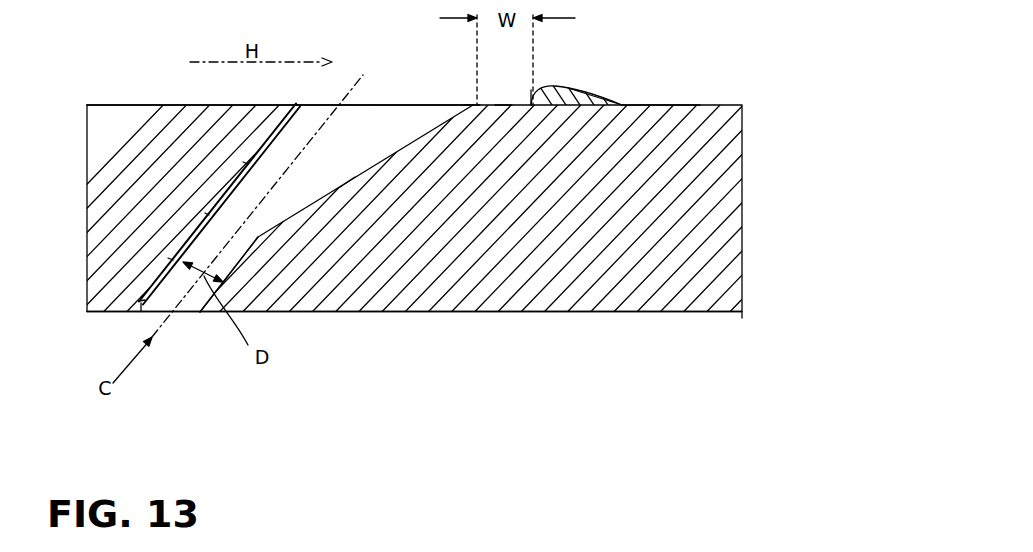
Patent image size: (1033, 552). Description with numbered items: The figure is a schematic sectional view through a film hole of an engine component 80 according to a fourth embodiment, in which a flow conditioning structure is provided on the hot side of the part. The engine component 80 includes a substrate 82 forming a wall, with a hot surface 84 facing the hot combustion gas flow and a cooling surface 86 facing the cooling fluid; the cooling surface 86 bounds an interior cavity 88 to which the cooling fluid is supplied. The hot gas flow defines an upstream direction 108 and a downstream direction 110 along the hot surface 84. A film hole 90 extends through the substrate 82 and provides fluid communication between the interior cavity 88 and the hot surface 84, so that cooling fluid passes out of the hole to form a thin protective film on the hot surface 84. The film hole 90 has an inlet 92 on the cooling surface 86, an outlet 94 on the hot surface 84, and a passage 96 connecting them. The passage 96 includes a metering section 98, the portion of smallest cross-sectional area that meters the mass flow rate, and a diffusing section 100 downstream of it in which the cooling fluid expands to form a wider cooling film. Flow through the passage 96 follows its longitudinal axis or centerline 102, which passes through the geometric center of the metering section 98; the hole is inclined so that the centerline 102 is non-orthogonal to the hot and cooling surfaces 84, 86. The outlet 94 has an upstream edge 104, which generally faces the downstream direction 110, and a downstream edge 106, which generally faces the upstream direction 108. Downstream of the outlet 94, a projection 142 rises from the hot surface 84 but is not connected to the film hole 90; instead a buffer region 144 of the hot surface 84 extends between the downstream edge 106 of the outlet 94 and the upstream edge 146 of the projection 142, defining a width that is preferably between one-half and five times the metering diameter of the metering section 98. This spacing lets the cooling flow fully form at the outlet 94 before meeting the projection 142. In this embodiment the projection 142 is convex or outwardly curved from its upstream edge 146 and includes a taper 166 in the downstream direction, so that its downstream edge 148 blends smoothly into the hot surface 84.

The engine component 80 is at (98, 93).
The substrate 82 is at (589, 217).
The hot surface 84 is at (143, 105).
The cooling surface 86 is at (623, 312).
The interior cavity 88 is at (154, 388).
The film hole 90 is at (353, 184).
The inlet 92 is at (153, 315).
The outlet 94 is at (400, 105).
The passage 96 is at (304, 188).
The metering section 98 is at (168, 258).
The diffusing section 100 is at (243, 162).
The centerline 102 is at (183, 302).
The upstream edge 104 is at (300, 107).
The downstream edge 106 is at (473, 104).
The upstream direction 108 is at (245, 47).
The downstream direction 110 is at (328, 49).
The projection 142 is at (627, 79).
The buffer region 144 is at (503, 105).
The upstream edge 146 is at (530, 100).
The downstream edge 148 is at (625, 105).
The taper 166 is at (592, 92).